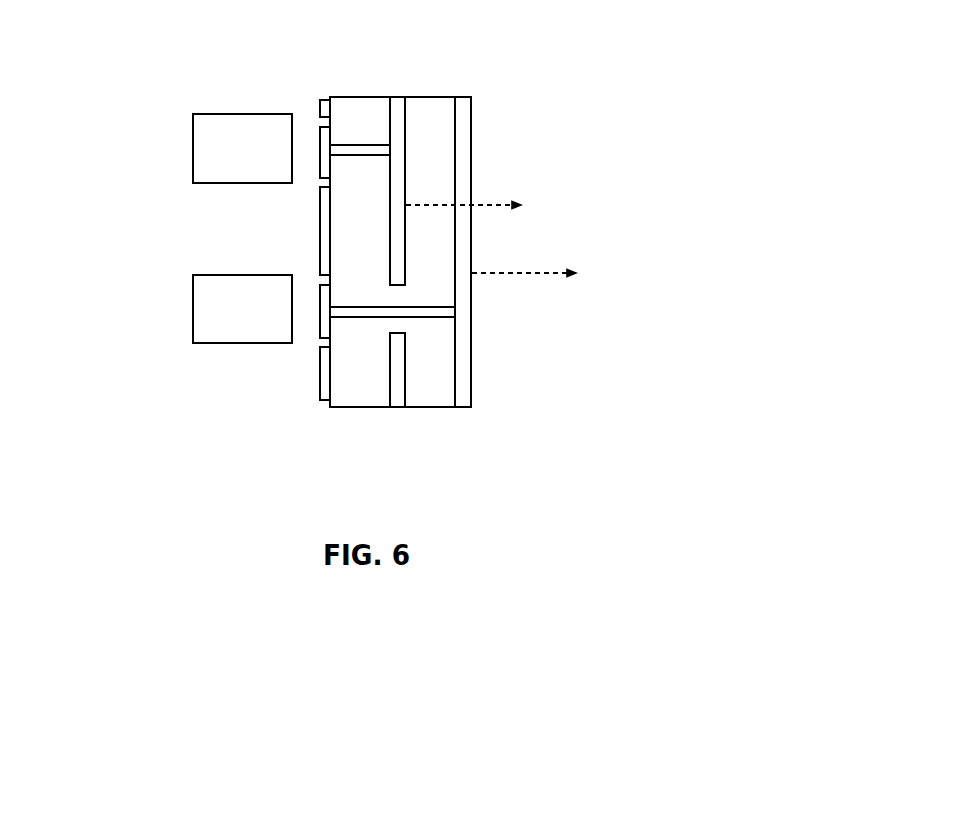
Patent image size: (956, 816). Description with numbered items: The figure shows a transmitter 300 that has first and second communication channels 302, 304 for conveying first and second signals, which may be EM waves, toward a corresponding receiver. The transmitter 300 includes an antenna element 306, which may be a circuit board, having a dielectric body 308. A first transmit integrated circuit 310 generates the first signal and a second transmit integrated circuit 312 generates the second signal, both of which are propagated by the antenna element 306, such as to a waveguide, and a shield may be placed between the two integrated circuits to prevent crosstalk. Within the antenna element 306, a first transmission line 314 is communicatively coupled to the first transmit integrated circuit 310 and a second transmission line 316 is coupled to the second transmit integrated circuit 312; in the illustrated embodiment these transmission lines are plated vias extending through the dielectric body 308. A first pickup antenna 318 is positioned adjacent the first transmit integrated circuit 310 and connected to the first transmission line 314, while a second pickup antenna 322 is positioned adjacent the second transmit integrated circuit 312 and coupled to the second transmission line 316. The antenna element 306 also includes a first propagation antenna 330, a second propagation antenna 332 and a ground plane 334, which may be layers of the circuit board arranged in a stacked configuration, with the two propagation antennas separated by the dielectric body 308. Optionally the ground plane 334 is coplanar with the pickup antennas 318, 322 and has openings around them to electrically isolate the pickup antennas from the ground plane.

The transmitter 300 is at (529, 77).
The first communication channel 302 is at (153, 147).
The second communication channel 304 is at (146, 313).
The antenna element 306 is at (394, 68).
The dielectric body 308 is at (425, 390).
The first transmit integrated circuit 310 is at (247, 113).
The second transmit integrated circuit 312 is at (247, 343).
The first transmission line 314 is at (360, 143).
The second transmission line 316 is at (433, 318).
The first pickup antenna 318 is at (322, 145).
The second pickup antenna 322 is at (318, 328).
The first propagation antenna 330 is at (398, 175).
The second propagation antenna 332 is at (462, 163).
The ground plane 334 is at (322, 228).